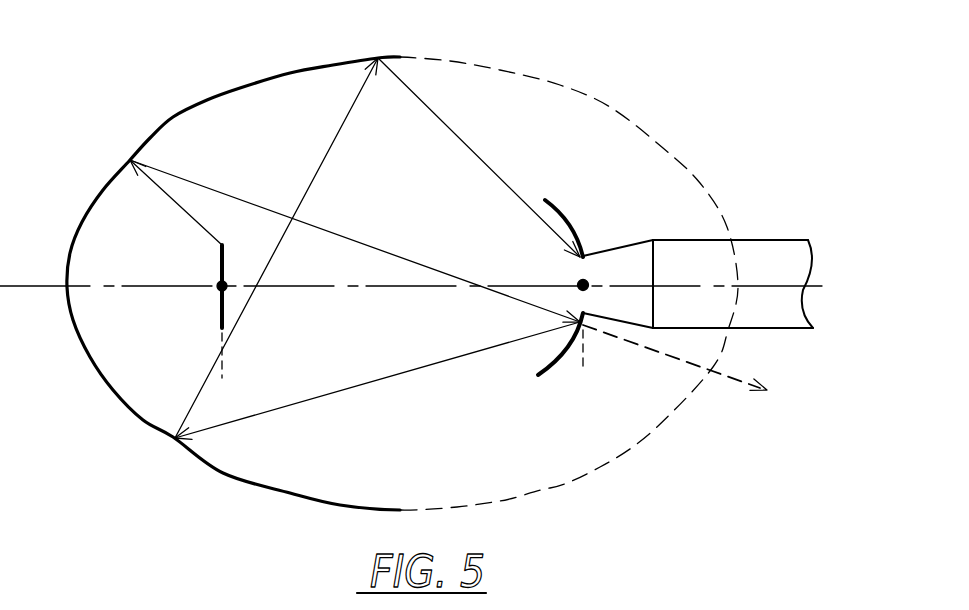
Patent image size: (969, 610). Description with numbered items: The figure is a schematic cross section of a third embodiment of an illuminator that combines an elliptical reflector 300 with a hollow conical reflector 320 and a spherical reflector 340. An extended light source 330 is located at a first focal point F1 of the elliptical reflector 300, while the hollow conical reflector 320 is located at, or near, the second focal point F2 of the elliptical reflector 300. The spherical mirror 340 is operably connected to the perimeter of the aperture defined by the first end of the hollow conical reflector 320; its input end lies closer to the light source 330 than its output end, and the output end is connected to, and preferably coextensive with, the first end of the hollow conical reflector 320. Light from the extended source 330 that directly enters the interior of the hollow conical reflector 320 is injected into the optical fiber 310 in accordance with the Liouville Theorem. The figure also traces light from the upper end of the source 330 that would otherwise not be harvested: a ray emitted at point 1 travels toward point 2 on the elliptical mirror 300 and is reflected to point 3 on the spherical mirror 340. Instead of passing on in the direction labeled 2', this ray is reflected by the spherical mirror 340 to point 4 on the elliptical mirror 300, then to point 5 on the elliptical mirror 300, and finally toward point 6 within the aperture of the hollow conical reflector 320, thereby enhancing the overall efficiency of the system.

The elliptical reflector 300 is at (240, 87).
The extended light source 330 is at (218, 247).
The spherical reflector 340 is at (563, 207).
The hollow conical reflector 320 is at (623, 247).
The optical fiber 310 is at (750, 240).
The point 1 is at (242, 238).
The point 2 is at (163, 194).
The point 3 is at (356, 267).
The point 4 is at (361, 395).
The point 5 is at (276, 234).
The point 6 is at (479, 170).
The direction 2' is at (690, 368).
The first focal point F1 is at (219, 374).
The second focal point F2 is at (584, 346).